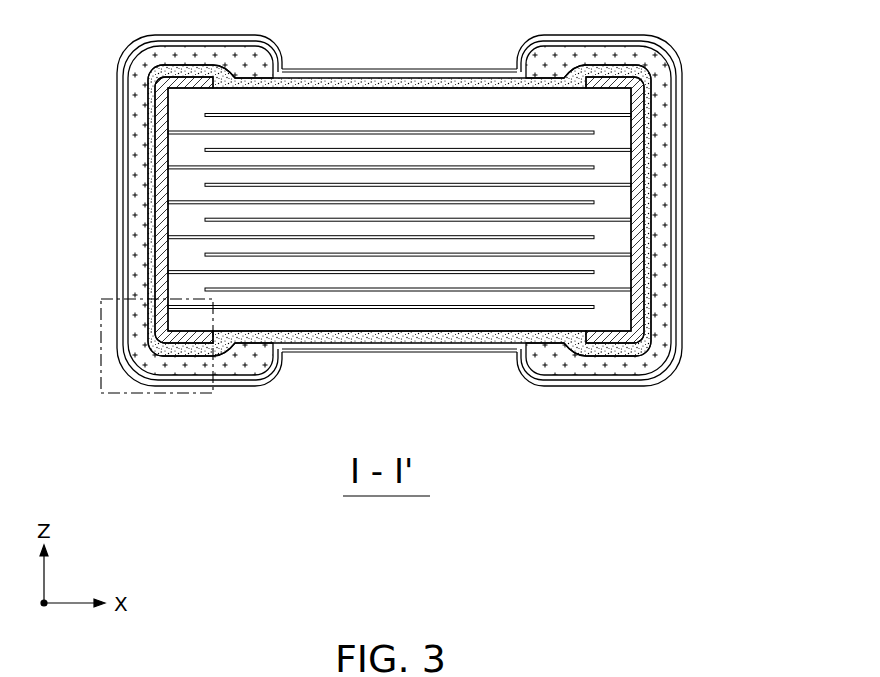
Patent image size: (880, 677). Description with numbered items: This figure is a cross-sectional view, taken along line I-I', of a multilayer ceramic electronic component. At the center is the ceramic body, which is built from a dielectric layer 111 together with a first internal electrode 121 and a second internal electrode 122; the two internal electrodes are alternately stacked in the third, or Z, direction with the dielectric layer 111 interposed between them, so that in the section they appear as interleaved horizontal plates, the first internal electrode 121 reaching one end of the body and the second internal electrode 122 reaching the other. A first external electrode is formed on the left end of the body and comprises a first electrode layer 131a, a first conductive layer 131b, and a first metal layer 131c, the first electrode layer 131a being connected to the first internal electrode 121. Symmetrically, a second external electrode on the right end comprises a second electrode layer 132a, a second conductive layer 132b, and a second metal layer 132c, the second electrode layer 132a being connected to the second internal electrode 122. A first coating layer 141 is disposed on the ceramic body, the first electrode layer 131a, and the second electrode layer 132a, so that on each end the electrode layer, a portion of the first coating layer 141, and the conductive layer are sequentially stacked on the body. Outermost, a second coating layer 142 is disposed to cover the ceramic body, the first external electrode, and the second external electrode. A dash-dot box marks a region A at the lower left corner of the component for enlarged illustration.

The dielectric layer 111 is at (397, 322).
The first internal electrode 121 is at (322, 305).
The second internal electrode 122 is at (462, 287).
The first electrode layer 131a is at (160, 100).
The first conductive layer 131b is at (137, 177).
The first metal layer 131c is at (125, 205).
The second electrode layer 132a is at (637, 100).
The second conductive layer 132b is at (660, 176).
The second metal layer 132c is at (670, 205).
The first coating layer 141 is at (150, 140).
The second coating layer 142 is at (118, 235).
The enlarged region A is at (101, 354).